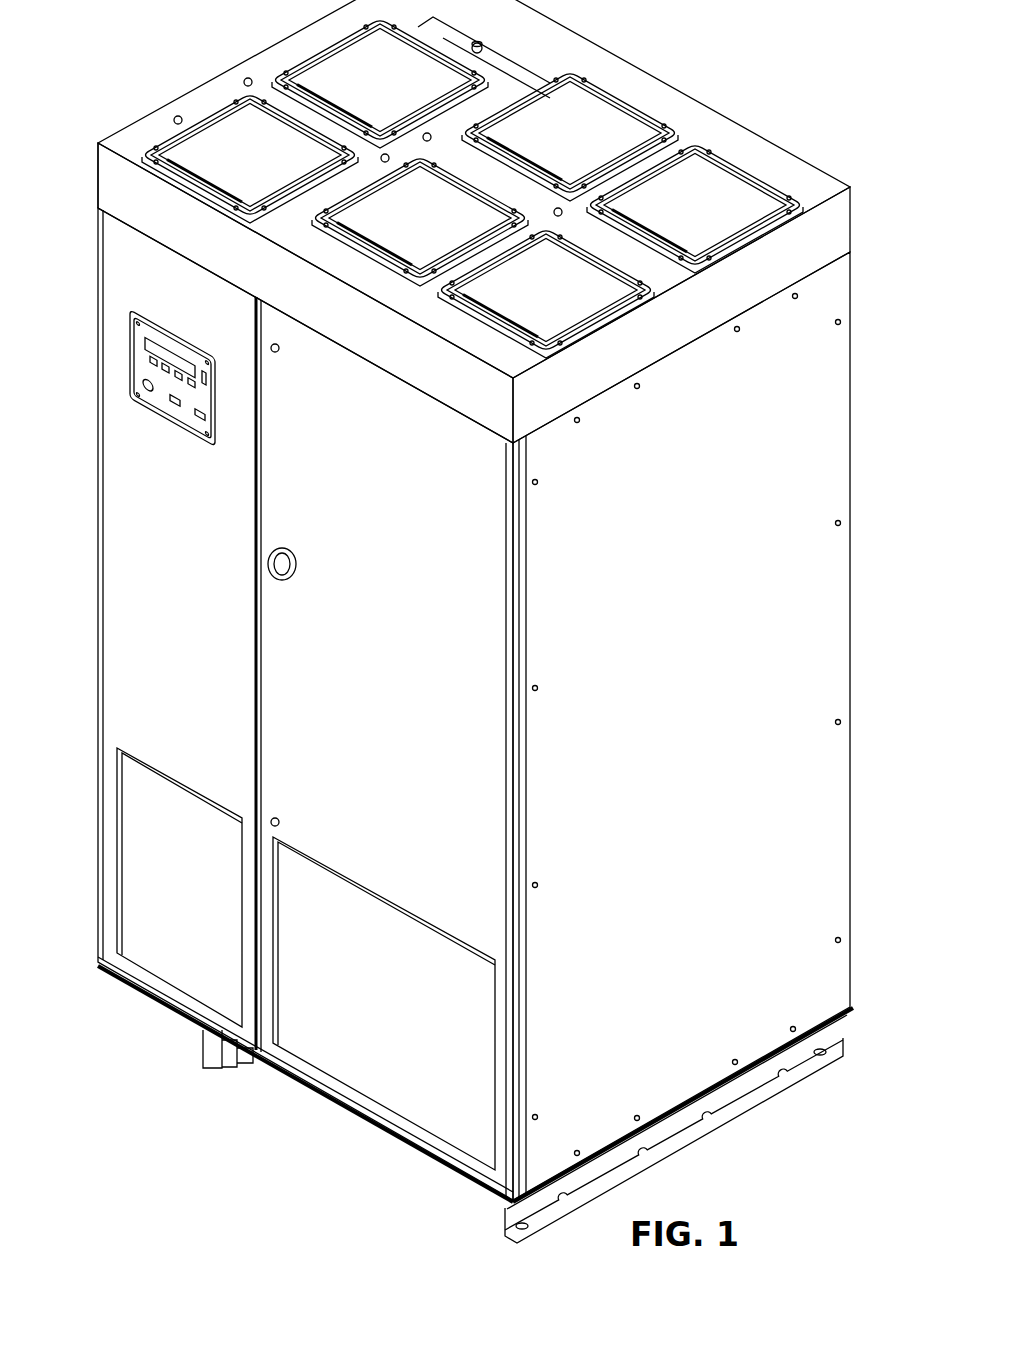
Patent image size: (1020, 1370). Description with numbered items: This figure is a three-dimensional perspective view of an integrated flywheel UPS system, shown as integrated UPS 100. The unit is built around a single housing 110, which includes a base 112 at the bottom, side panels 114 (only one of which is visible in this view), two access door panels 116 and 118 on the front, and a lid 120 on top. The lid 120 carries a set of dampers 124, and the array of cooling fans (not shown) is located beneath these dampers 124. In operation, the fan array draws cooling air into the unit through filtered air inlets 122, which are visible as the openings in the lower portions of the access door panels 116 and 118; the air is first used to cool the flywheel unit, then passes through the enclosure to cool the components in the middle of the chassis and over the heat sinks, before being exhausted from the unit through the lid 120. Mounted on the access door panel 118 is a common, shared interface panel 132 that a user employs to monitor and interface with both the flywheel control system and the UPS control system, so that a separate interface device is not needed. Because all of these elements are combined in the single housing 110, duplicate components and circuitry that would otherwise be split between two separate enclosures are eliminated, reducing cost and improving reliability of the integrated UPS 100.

The integrated UPS 100 is at (800, 24).
The housing 110 is at (858, 345).
The base 112 is at (840, 1053).
The side panel 114 is at (842, 624).
The access door panel 116 is at (350, 719).
The access door panel 118 is at (133, 592).
The lid 120 is at (638, 87).
The filtered air inlet 122 is at (162, 958).
The damper 124 is at (217, 163).
The interface panel 132 is at (187, 430).